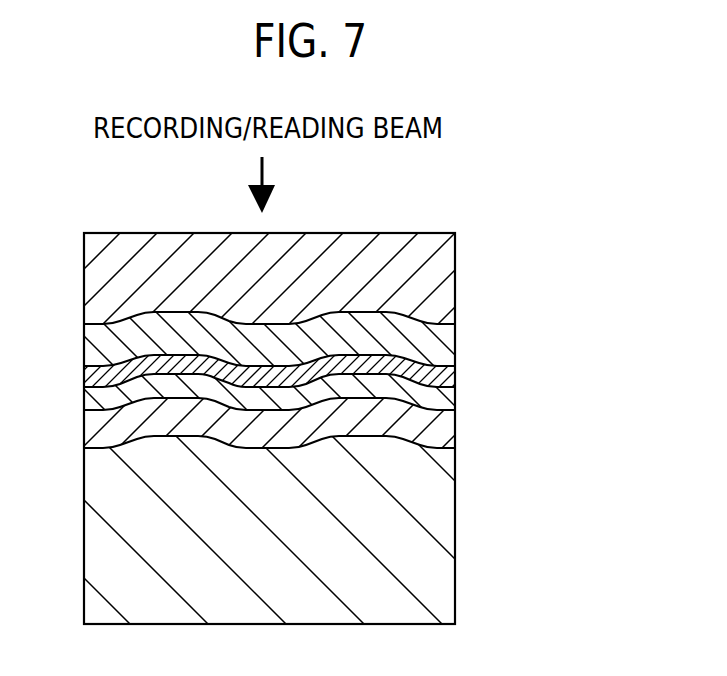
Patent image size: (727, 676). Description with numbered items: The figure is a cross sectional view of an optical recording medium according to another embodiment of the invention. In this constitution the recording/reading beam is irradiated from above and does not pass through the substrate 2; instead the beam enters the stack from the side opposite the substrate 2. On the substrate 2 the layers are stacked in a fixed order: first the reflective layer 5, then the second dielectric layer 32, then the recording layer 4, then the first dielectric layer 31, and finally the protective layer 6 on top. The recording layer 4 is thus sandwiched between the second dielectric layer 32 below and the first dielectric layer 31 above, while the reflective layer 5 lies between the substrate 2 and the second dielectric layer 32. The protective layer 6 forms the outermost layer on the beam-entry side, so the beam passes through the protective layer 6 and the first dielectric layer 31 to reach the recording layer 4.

The substrate 2 is at (455, 480).
The reflective layer 5 is at (455, 422).
The second dielectric layer 32 is at (455, 397).
The recording layer 4 is at (455, 378).
The first dielectric layer 31 is at (455, 343).
The protective layer 6 is at (455, 285).